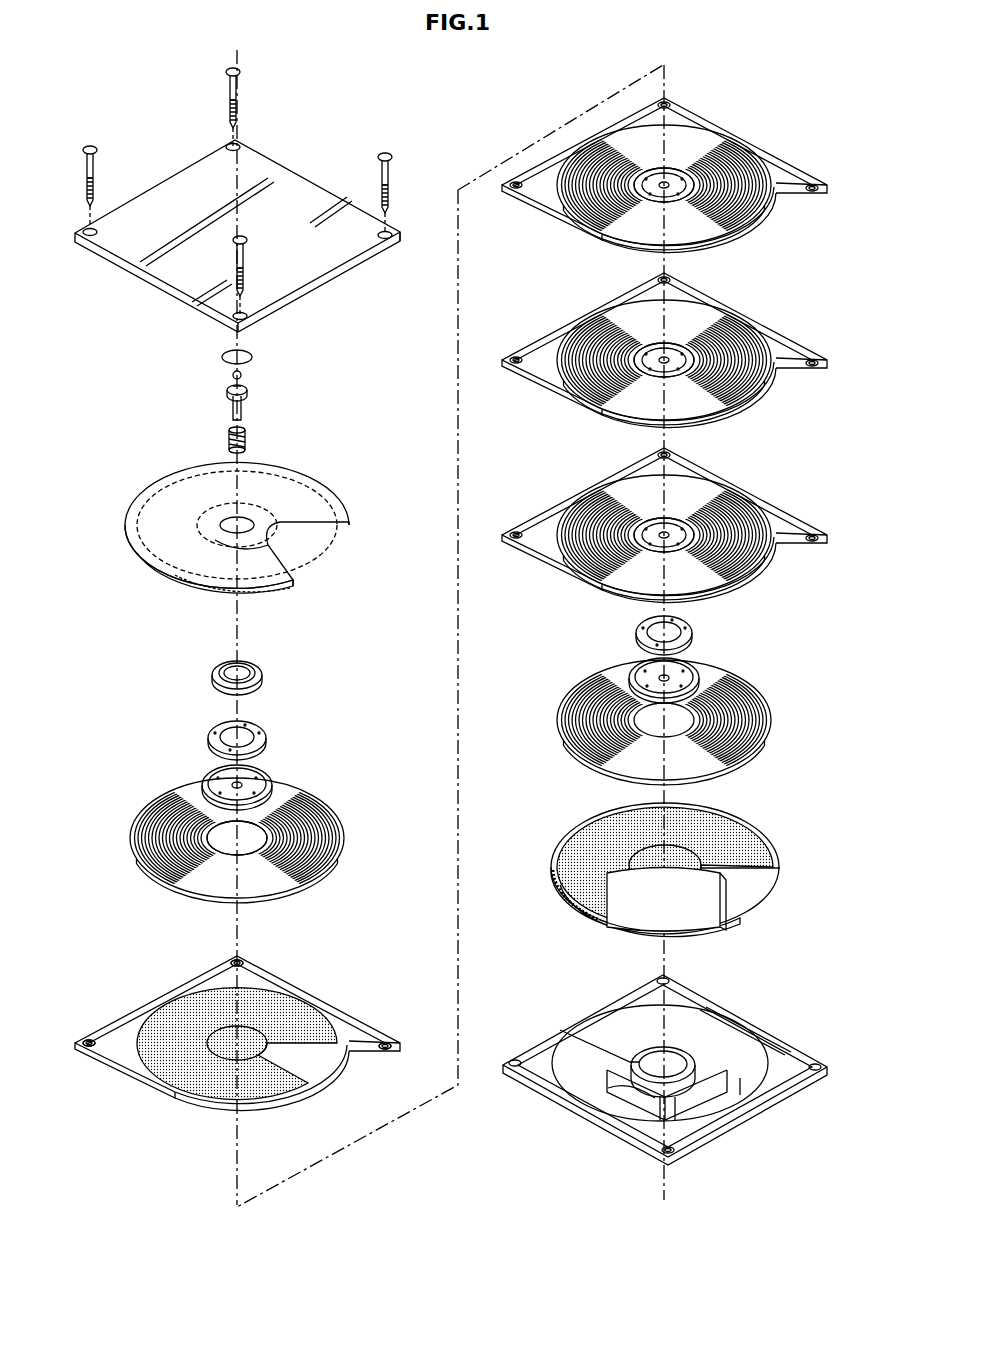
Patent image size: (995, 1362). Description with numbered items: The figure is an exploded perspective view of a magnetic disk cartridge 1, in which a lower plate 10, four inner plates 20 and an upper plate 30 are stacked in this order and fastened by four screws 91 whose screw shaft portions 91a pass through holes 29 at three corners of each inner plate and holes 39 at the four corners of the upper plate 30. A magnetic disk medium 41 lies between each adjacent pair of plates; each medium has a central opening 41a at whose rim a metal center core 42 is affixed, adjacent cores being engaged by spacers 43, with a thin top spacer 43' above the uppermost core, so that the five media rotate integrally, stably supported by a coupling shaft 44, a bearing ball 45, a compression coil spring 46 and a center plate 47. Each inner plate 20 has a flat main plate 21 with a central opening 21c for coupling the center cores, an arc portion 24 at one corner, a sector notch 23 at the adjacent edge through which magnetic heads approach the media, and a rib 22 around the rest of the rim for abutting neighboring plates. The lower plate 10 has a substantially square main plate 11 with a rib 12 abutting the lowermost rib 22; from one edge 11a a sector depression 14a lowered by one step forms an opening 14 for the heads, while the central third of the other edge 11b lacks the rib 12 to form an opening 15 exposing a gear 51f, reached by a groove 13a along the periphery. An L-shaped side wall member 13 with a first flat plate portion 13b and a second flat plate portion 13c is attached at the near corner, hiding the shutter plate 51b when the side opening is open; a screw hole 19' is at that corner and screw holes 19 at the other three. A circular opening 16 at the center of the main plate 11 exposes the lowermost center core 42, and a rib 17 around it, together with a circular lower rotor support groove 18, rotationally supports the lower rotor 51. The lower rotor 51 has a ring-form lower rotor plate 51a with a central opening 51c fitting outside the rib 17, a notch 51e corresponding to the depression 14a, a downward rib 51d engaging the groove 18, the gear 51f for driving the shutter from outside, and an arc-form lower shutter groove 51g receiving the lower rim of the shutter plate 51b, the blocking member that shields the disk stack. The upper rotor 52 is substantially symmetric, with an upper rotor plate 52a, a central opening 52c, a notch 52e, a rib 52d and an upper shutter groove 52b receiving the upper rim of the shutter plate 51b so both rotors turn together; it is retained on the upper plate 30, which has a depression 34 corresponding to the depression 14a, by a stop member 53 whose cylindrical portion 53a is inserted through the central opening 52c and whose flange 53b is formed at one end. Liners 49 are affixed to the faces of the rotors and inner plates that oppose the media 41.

The magnetic disk cartridge 1 is at (448, 135).
The lower plate 10 is at (766, 1005).
The main plate 11 is at (540, 1060).
The one edge 11a is at (790, 1090).
The other edge 11b is at (600, 1085).
The rib 12 is at (760, 1042).
The side wall member 13 is at (705, 1122).
The groove 13a is at (620, 1102).
The first flat plate portion 13b is at (610, 1112).
The second flat plate portion 13c is at (700, 1135).
The opening 14 is at (722, 1105).
The depression 14a is at (770, 1100).
The opening 15 is at (570, 1105).
The circular opening 16 is at (540, 1095).
The rib 17 is at (630, 1055).
The lower rotor support groove 18 is at (636, 1005).
The screw hole 19 is at (656, 1046).
The screw hole 19' is at (661, 1178).
The inner plate 20 is at (270, 968).
The main plate 21 is at (185, 985).
The central opening 21c is at (222, 1107).
The rib 22 is at (362, 1022).
The notch 23 is at (310, 1068).
The arc portion 24 is at (258, 1106).
The holes 29 is at (232, 953).
The upper plate 30 is at (252, 172).
The depression 34 is at (345, 275).
The holes 39 is at (228, 146).
The magnetic disk medium 41 is at (345, 825).
The opening 41a is at (255, 850).
The center core 42 is at (265, 780).
The spacer 43 is at (688, 633).
The top spacer 43' is at (263, 740).
The coupling shaft 44 is at (245, 407).
The bearing ball 45 is at (243, 375).
The compression coil spring 46 is at (248, 440).
The center plate 47 is at (255, 355).
The liner 49 is at (150, 492).
The lower rotor 51 is at (722, 808).
The lower rotor plate 51a is at (762, 840).
The shutter plate 51b is at (710, 893).
The central opening 51c is at (660, 850).
The rib 51d is at (779, 872).
The notch 51e is at (745, 895).
The gear 51f is at (558, 866).
The lower shutter groove 51g is at (592, 916).
The upper rotor 52 is at (315, 470).
The upper rotor plate 52a is at (305, 490).
The upper shutter groove 52b is at (205, 592).
The central opening 52c is at (165, 572).
The rib 52d is at (345, 518).
The notch 52e is at (310, 548).
The stop member 53 is at (250, 665).
The cylindrical portion 53a is at (262, 672).
The flange 53b is at (215, 680).
The screw 91 is at (226, 73).
The screw shaft portion 91a is at (230, 100).